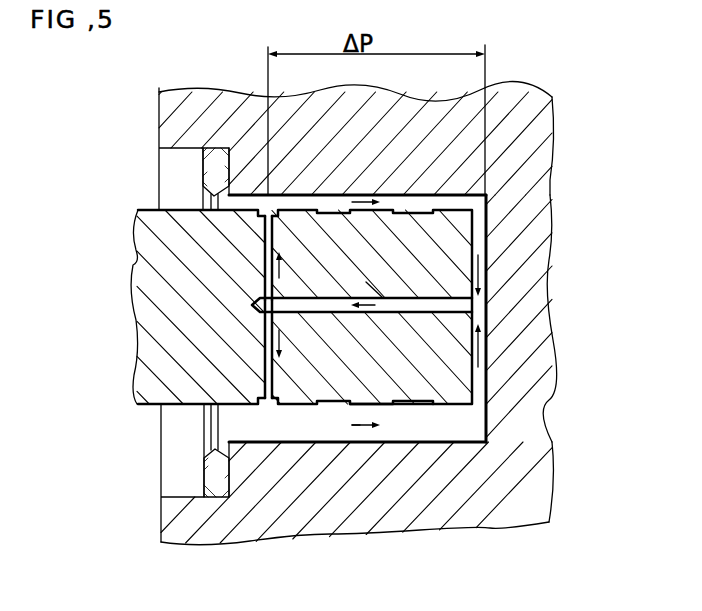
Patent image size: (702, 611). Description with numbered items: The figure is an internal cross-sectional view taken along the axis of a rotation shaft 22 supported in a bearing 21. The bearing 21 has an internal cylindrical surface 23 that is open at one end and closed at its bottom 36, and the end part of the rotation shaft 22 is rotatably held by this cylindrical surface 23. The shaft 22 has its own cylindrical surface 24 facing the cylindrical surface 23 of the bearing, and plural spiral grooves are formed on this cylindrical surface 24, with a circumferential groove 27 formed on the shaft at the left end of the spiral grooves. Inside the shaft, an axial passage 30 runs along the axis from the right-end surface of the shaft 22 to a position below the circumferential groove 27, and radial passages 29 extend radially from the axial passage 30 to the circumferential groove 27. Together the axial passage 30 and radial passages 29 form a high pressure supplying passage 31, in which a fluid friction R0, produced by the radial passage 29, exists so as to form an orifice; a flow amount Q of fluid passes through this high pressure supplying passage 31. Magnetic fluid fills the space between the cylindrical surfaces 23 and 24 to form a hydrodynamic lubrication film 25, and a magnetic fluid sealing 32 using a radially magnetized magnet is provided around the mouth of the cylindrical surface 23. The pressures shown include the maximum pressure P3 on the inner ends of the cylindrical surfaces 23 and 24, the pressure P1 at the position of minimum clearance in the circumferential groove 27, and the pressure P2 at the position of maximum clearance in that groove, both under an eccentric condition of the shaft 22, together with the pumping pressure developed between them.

The bearing 21 is at (175, 123).
The rotation shaft 22 is at (133, 262).
The cylindrical surface 23 is at (428, 440).
The cylindrical surface 24 is at (325, 410).
The hydrodynamic lubrication film 25 is at (467, 420).
The circumferential groove 27 is at (268, 407).
The radial passages 29 is at (266, 272).
The axial passage 30 is at (392, 405).
The high pressure supplying passage 31 is at (262, 318).
The magnetic fluid sealing 32 is at (204, 447).
The bottom 36 is at (480, 388).
The fluid friction R0 is at (267, 357).
The flow amount Q is at (365, 283).
The pressure at minimum clearance P1 is at (260, 200).
The pressure at maximum clearance P2 is at (263, 423).
The maximum pressure P3 is at (483, 243).